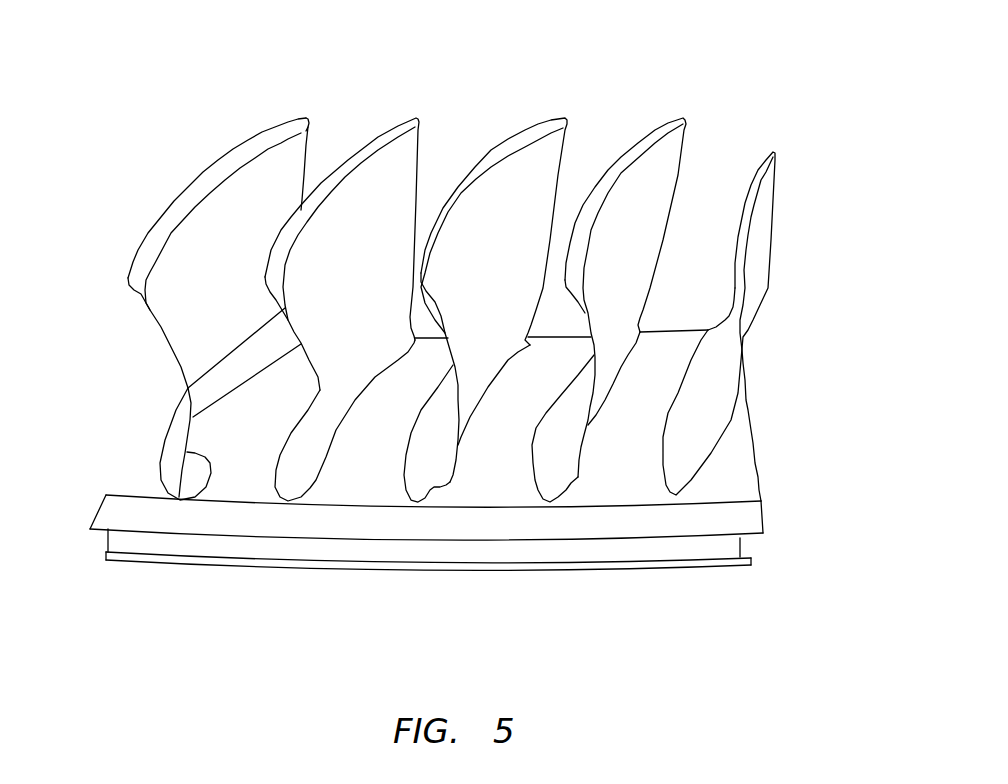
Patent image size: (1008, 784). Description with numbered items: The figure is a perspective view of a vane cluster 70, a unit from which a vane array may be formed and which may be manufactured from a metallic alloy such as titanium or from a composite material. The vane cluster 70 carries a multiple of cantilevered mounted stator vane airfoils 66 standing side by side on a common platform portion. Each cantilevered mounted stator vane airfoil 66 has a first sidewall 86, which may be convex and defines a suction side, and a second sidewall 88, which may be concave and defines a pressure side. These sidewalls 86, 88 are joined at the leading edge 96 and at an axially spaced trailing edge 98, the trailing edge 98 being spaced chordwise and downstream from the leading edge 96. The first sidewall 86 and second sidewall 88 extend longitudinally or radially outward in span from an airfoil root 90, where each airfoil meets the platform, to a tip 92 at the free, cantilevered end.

The cantilevered mounted stator vane airfoil 66 is at (270, 113).
The vane cluster 70 is at (810, 291).
The first sidewall 86 is at (132, 228).
The second sidewall 88 is at (308, 132).
The airfoil root 90 is at (207, 462).
The tip 92 is at (192, 201).
The leading edge 96 is at (160, 297).
The trailing edge 98 is at (295, 166).